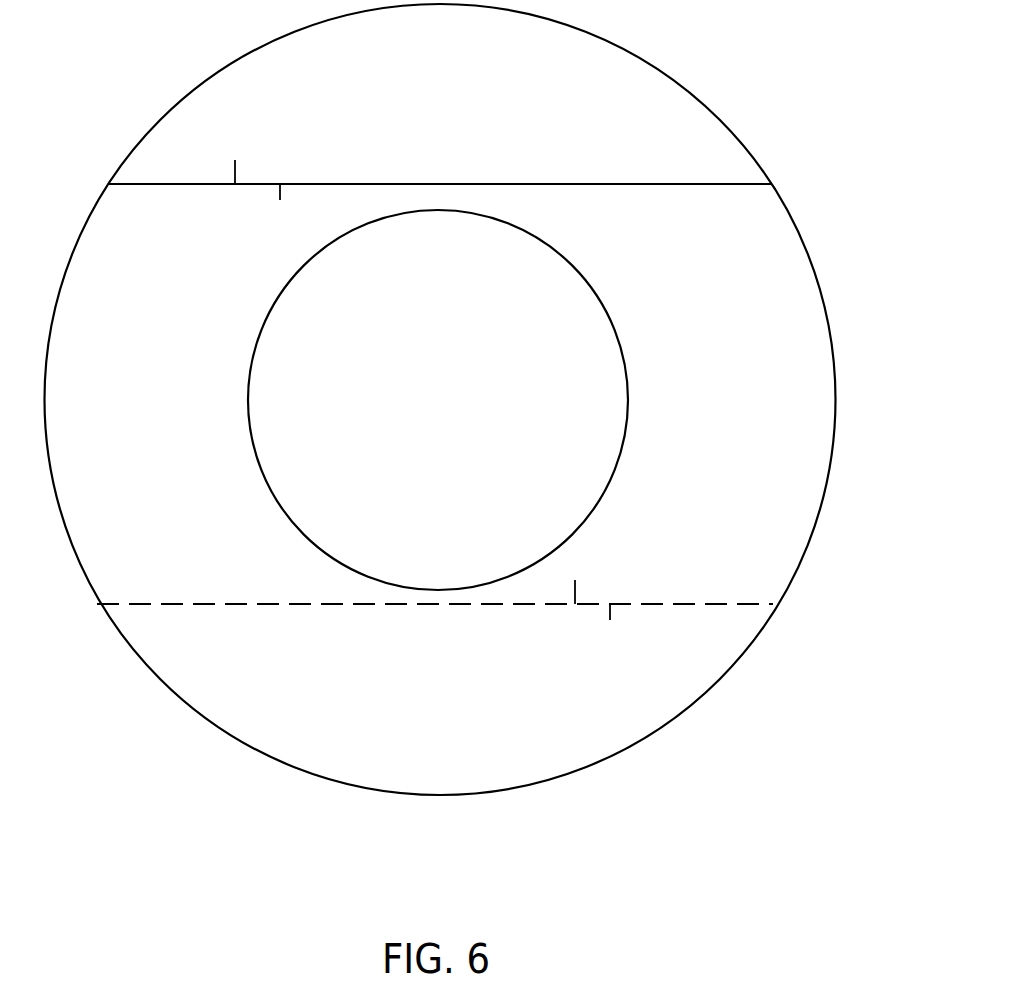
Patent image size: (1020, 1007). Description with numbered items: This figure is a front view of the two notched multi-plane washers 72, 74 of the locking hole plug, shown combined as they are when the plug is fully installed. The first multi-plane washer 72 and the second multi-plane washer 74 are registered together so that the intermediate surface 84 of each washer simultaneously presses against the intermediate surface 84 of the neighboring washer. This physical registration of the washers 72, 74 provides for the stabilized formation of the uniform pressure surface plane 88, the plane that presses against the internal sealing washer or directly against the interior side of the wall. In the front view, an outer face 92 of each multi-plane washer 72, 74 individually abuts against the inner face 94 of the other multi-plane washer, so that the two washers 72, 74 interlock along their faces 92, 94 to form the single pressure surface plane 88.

The first multi-plane washer 72 is at (126, 156).
The second multi-plane washer 74 is at (110, 623).
The intermediate surface 84 is at (250, 375).
The uniform pressure surface plane 88 is at (657, 158).
The outer face 92 is at (235, 160).
The inner face 94 is at (280, 200).